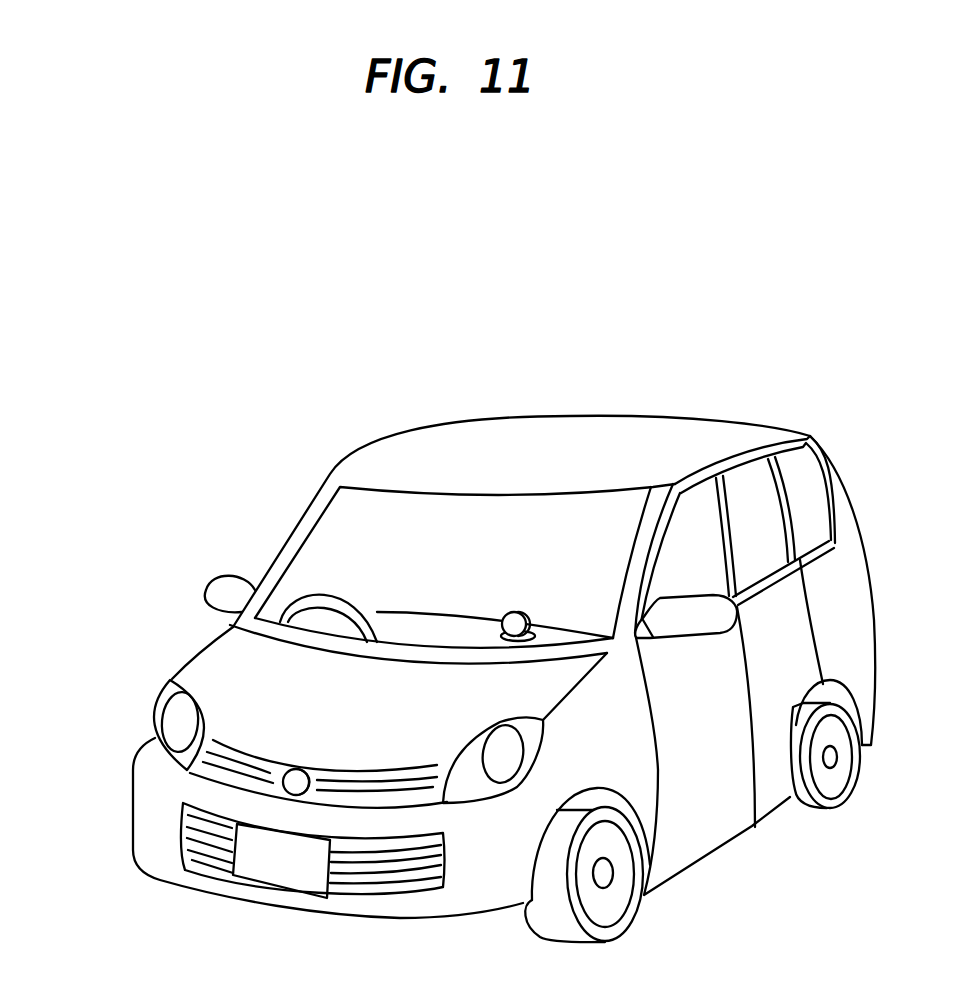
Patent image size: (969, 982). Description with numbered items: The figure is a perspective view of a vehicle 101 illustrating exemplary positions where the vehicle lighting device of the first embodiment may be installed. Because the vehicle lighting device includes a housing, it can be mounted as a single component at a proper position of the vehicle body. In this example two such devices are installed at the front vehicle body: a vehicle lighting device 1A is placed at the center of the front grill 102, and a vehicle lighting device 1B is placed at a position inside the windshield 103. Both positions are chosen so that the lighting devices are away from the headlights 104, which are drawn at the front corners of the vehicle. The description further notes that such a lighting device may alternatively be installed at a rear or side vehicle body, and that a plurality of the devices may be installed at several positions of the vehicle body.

The vehicle 101 is at (452, 620).
The front grill 102 is at (370, 788).
The windshield 103 is at (333, 533).
The headlights 104 is at (155, 703).
The vehicle lighting device 1A is at (294, 757).
The vehicle lighting device 1B is at (524, 599).